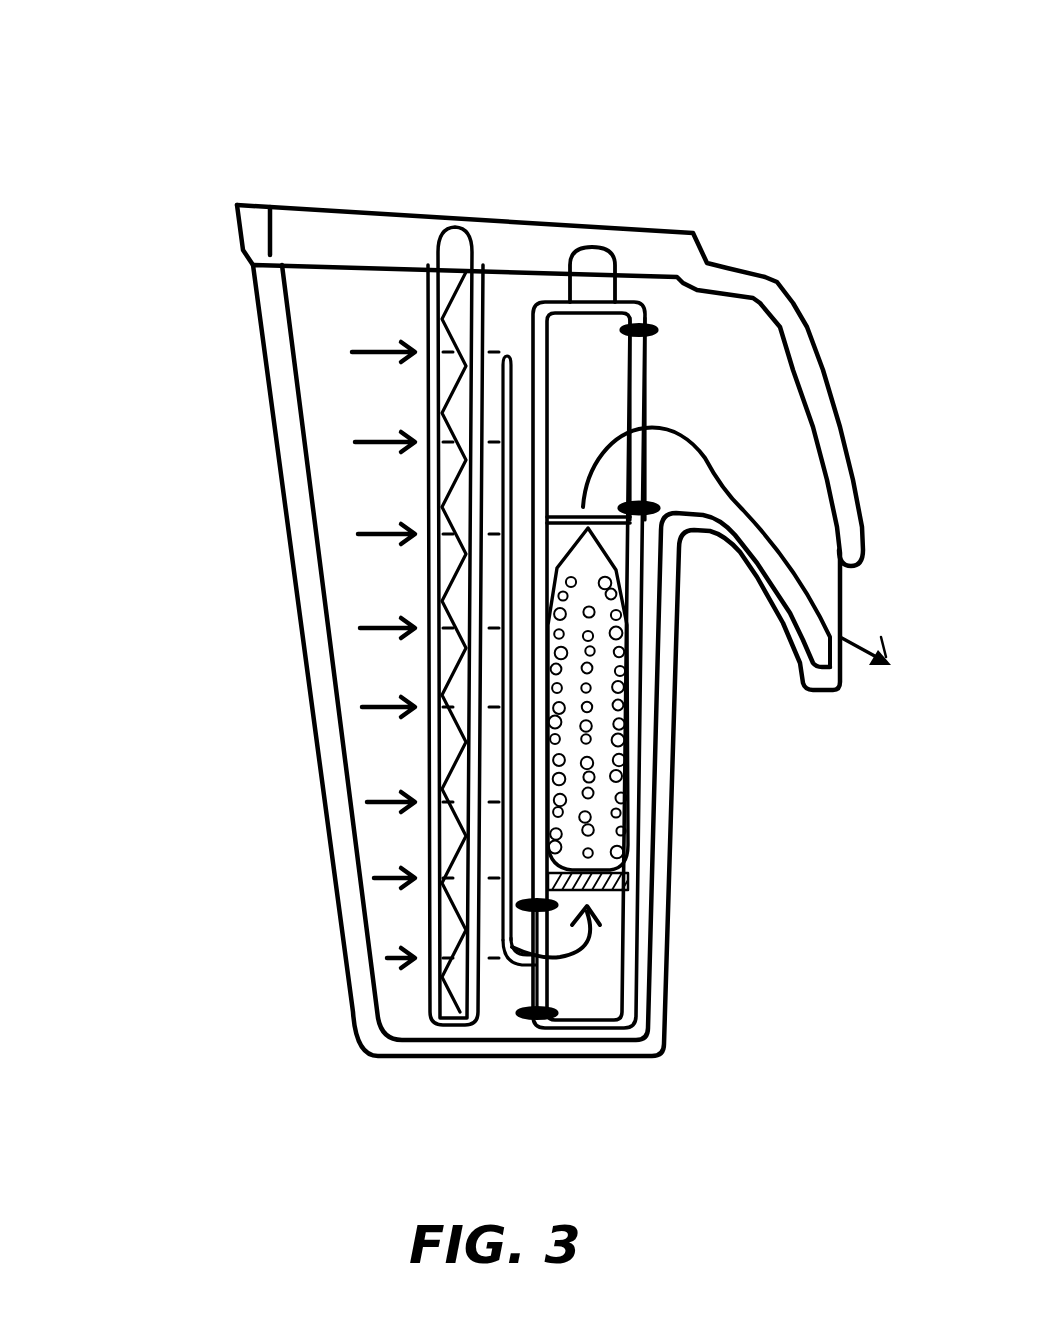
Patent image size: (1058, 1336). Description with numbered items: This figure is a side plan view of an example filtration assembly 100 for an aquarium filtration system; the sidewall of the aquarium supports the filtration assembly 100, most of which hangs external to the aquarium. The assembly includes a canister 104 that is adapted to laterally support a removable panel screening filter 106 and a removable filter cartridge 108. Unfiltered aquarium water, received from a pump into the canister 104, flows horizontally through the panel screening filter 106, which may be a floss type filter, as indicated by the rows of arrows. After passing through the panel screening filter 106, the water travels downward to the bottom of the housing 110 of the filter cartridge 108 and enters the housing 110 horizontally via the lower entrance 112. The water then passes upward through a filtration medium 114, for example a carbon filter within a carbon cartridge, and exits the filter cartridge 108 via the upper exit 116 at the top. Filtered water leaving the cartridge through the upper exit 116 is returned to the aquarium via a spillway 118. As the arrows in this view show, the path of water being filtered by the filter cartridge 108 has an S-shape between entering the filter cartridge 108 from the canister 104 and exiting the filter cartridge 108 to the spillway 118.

The filtration assembly 100 is at (149, 89).
The canister 104 is at (313, 593).
The panel screening filter 106 is at (440, 1023).
The filter cartridge 108 is at (585, 1023).
The housing 110 is at (637, 807).
The lower entrance 112 is at (527, 985).
The filtration medium 114 is at (607, 683).
The upper exit 116 is at (647, 387).
The spillway 118 is at (847, 585).